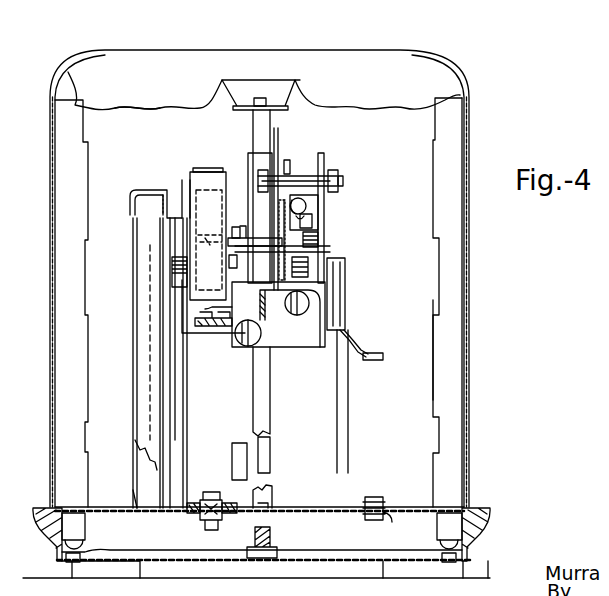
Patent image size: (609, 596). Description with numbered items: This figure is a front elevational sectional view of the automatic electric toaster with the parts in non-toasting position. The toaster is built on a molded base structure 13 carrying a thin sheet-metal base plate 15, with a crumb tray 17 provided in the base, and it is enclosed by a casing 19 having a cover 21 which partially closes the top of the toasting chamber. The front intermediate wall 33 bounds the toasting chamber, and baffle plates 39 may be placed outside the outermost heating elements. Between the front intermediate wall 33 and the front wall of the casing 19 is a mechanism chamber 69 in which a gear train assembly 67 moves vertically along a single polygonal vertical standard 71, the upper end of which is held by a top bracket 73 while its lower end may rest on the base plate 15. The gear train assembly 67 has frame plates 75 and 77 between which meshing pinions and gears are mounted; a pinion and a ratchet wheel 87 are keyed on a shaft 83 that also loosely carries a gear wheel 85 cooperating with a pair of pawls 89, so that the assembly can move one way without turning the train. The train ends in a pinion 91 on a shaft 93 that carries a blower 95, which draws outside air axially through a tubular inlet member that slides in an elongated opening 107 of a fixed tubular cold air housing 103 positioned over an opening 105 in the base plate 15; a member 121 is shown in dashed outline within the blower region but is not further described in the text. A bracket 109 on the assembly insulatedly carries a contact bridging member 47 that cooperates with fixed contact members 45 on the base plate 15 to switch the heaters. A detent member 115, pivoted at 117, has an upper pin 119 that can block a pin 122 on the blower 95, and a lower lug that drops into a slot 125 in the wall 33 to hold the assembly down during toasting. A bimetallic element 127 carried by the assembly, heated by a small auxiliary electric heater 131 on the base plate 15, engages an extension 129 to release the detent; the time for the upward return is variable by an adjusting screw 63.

The base structure 13 is at (52, 542).
The base plate 15 is at (302, 506).
The crumb tray 17 is at (200, 564).
The casing 19 is at (468, 300).
The cover 21 is at (413, 56).
The front intermediate wall 33 is at (420, 397).
The baffle plates 39 is at (52, 196).
The contact members 45 is at (384, 500).
The contact bridging member 47 is at (374, 362).
The adjusting screw 63 is at (271, 538).
The gear train assembly 67 is at (341, 212).
The mechanism chamber 69 is at (205, 152).
The vertical standard 71 is at (273, 386).
The top bracket 73 is at (283, 80).
The frame plate 75 is at (326, 155).
The frame plate 77 is at (274, 160).
The shaft 83 is at (287, 190).
The gear wheel 85 is at (308, 160).
The ratchet wheel 87 is at (290, 222).
The pawls 89 is at (285, 205).
The pinion 91 is at (320, 238).
The shaft 93 is at (240, 240).
The blower 95 is at (207, 190).
The tubular housing 103 is at (140, 374).
The opening 105 is at (152, 512).
The elongated opening 107 is at (167, 220).
The bracket 109 is at (338, 298).
The detent member 115 is at (246, 270).
The pivot 117 is at (230, 270).
The pin 119 is at (232, 235).
The dashed member 121 is at (195, 285).
The pin 122 is at (236, 226).
The slot 125 is at (240, 452).
The bimetallic element 127 is at (215, 328).
The extension 129 is at (208, 306).
The auxiliary electric heater 131 is at (193, 525).